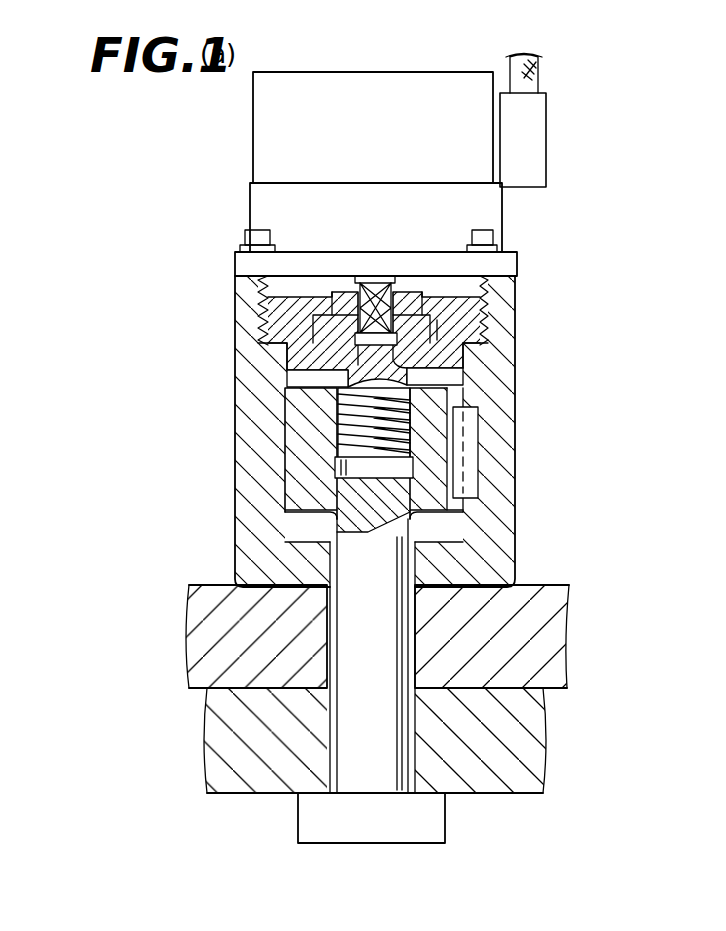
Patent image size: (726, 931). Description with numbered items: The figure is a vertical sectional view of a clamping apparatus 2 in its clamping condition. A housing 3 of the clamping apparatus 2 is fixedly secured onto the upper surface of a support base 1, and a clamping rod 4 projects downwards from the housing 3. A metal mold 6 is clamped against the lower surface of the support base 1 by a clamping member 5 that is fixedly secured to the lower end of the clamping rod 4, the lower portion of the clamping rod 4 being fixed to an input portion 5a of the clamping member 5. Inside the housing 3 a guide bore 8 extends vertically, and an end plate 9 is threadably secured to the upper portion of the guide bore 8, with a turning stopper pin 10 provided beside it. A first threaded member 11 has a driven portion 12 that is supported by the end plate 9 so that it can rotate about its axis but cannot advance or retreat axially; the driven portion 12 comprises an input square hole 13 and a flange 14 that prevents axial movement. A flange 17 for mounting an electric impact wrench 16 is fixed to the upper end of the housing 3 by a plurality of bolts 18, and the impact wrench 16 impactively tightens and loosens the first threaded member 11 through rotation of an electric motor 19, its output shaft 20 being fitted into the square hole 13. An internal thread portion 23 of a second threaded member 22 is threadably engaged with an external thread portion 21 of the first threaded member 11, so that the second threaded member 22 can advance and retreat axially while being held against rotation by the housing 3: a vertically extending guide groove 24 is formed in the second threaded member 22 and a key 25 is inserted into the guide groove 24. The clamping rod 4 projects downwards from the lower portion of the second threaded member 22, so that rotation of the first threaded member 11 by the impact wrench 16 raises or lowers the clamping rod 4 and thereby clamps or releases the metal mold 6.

The support base 1 is at (555, 610).
The clamping apparatus 2 is at (584, 432).
The housing 3 is at (520, 396).
The clamping rod 4 is at (416, 633).
The clamping member 5 is at (374, 823).
The input portion 5a is at (365, 800).
The metal mold 6 is at (525, 742).
The guide bore 8 is at (287, 522).
The end plate 9 is at (290, 347).
The turning stopper pin 10 is at (262, 300).
The first threaded member 11 is at (335, 284).
The driven portion 12 is at (411, 290).
The input square hole 13 is at (437, 322).
The flange 14 is at (492, 302).
The impact wrench 16 is at (250, 190).
The flange 17 is at (240, 252).
The bolts 18 is at (490, 240).
The electric motor 19 is at (253, 103).
The output shaft 20 is at (378, 283).
The external thread portion 21 is at (355, 400).
The second threaded member 22 is at (284, 461).
The internal thread portion 23 is at (348, 443).
The guide groove 24 is at (462, 503).
The key 25 is at (472, 478).